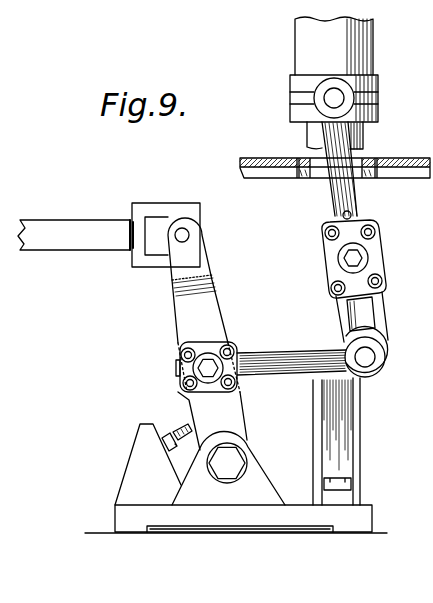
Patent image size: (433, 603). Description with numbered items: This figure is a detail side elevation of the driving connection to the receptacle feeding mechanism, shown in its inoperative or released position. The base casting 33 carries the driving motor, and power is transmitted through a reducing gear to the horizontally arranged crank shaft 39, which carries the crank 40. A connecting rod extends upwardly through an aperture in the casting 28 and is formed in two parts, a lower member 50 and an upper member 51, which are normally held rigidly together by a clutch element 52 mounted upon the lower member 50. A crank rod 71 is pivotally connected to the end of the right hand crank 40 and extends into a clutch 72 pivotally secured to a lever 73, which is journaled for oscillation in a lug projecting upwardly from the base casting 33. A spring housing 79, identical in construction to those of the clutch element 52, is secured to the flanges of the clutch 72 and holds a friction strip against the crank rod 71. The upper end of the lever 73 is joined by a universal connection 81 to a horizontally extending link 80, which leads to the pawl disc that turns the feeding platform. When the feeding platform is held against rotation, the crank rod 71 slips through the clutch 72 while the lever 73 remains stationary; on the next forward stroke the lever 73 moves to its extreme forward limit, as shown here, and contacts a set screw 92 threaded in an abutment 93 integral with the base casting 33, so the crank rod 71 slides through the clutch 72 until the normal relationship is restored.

The casting 28 is at (400, 158).
The base casting 33 is at (187, 518).
The crank shaft 39 is at (342, 380).
The crank 40 is at (367, 375).
The lower member 50 is at (380, 328).
The upper member 51 is at (347, 192).
The clutch element 52 is at (365, 240).
The crank rod 71 is at (295, 362).
The clutch 72 is at (238, 355).
The lever 73 is at (205, 307).
The spring housing 79 is at (193, 370).
The link 80 is at (88, 235).
The universal connection 81 is at (183, 228).
The set screw 92 is at (182, 430).
The abutment 93 is at (132, 481).